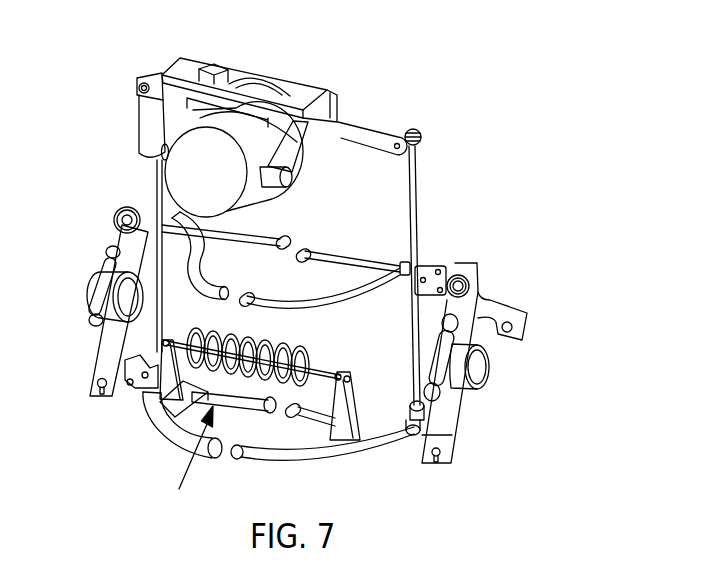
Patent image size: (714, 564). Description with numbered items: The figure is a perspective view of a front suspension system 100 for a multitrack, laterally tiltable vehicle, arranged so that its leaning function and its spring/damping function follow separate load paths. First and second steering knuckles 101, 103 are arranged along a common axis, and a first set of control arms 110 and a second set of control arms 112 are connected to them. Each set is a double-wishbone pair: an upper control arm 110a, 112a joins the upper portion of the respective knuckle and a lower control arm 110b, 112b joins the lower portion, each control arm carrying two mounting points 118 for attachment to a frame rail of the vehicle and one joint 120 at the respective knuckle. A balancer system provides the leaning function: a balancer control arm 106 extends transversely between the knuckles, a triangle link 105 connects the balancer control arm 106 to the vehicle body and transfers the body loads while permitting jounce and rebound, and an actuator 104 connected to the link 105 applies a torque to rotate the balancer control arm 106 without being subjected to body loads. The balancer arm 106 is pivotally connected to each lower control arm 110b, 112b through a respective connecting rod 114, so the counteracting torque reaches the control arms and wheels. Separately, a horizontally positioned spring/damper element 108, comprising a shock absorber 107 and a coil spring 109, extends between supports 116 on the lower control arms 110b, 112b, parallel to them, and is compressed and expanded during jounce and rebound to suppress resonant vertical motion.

The front suspension system 100 is at (482, 62).
The first steering knuckle 101 is at (118, 233).
The second steering knuckle 103 is at (510, 298).
The actuator 104 is at (177, 173).
The link 105 is at (193, 62).
The balancer control arm 106 is at (361, 134).
The shock absorber 107 is at (310, 358).
The spring/damper element 108 is at (179, 463).
The coil spring 109 is at (284, 341).
The first set of control arms 110 is at (190, 268).
The upper control arm 110a is at (197, 306).
The lower control arm 110b is at (158, 420).
The second set of control arms 112 is at (377, 283).
The upper control arm 112a is at (339, 252).
The lower control arm 112b is at (371, 452).
The connecting rod 114 is at (417, 173).
The support 116 is at (160, 398).
The mounting points 118 is at (252, 288).
The joint 120 is at (432, 270).